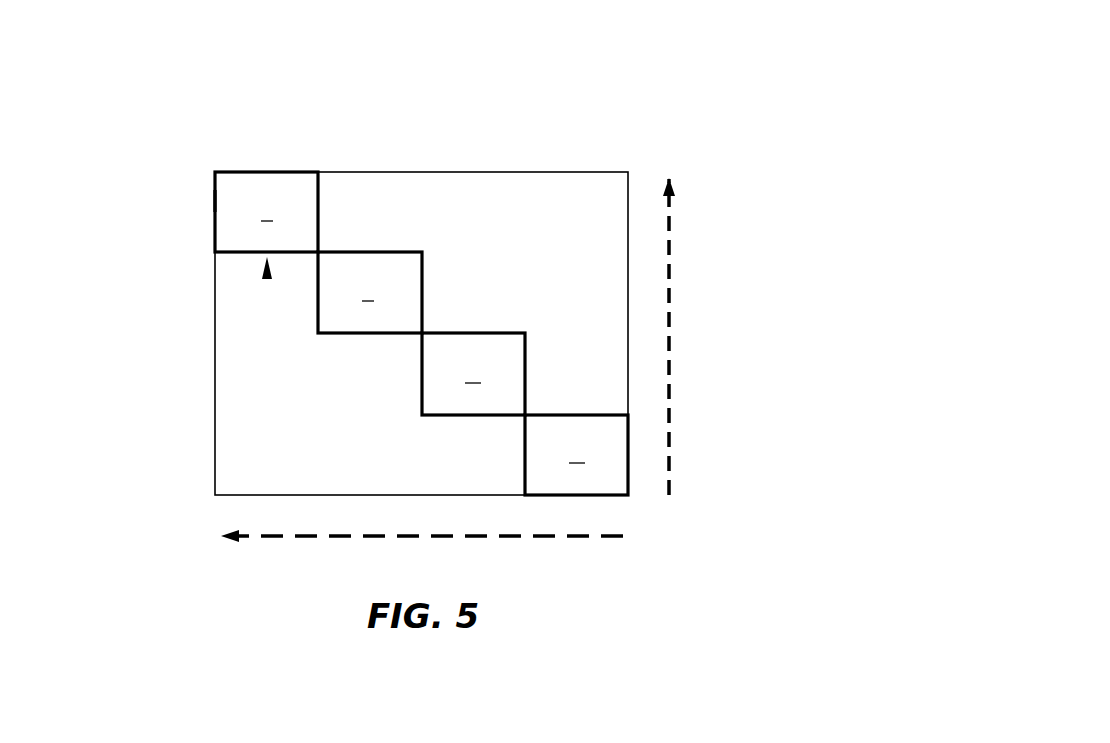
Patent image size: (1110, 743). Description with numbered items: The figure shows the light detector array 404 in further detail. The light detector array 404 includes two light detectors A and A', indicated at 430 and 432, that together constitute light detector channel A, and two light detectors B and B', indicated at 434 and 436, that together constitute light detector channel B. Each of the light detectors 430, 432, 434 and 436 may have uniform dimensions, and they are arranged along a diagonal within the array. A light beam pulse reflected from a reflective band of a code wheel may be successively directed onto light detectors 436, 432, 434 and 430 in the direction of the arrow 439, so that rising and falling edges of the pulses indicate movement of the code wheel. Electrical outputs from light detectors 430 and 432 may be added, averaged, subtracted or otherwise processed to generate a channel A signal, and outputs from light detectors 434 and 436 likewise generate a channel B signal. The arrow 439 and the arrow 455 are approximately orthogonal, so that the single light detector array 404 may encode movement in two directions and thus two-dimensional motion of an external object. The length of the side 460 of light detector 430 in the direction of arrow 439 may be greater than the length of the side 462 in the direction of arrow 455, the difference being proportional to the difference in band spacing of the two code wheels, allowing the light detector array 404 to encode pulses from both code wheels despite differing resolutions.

The light detector array 404 is at (628, 110).
The light detector A 430 is at (235, 217).
The light detector B 434 is at (338, 303).
The light detector A' 432 is at (443, 373).
The light detector B' 436 is at (547, 455).
The side of the light detector 460 is at (263, 280).
The side of the light detector 462 is at (202, 200).
The arrow 455 is at (692, 293).
The arrow 439 is at (527, 559).